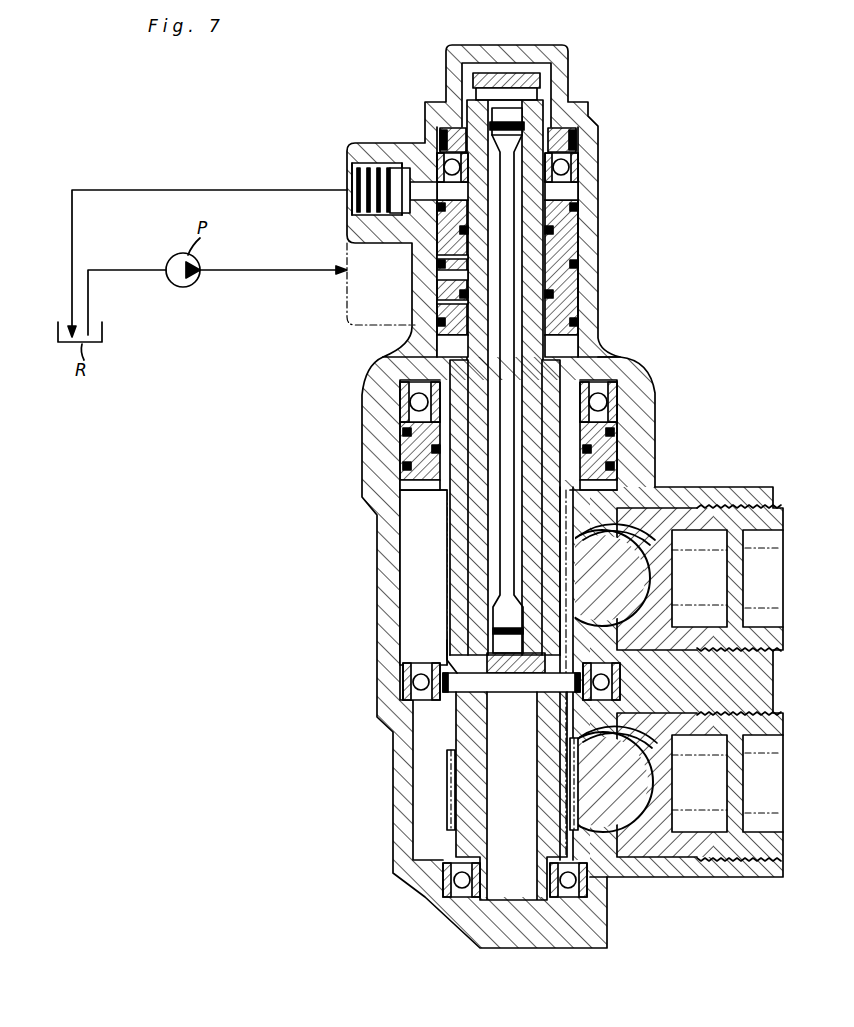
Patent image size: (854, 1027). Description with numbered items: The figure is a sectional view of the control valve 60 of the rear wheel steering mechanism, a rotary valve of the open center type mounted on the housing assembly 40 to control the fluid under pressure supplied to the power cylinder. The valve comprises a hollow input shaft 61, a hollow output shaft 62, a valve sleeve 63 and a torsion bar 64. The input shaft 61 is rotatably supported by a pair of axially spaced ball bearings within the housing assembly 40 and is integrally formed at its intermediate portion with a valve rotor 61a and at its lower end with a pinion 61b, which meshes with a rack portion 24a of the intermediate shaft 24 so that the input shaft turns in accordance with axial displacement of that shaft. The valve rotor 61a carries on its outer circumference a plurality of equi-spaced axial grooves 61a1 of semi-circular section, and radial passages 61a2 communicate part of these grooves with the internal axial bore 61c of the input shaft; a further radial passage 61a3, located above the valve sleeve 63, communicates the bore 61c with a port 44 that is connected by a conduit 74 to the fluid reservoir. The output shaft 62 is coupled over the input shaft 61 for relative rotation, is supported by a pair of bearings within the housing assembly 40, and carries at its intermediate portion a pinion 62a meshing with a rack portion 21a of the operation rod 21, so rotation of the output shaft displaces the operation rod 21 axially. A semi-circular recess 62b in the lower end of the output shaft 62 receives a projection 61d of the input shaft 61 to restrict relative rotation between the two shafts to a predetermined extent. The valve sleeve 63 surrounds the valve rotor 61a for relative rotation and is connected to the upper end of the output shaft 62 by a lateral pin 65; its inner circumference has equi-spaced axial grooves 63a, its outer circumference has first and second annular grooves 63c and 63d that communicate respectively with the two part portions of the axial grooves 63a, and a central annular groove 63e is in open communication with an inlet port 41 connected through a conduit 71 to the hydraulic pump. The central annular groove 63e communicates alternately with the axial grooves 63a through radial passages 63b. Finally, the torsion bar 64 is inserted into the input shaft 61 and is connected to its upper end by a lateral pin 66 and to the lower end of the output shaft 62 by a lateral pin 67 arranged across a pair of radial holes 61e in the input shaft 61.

The control valve 60 is at (655, 158).
The hollow input shaft 61 is at (552, 108).
The valve rotor 61a is at (546, 273).
The axial grooves 61a1 is at (440, 292).
The radial passages 61a2 is at (460, 265).
The radial passage 61a3 is at (440, 191).
The pinion 61b is at (450, 800).
The internal axial bore 61c is at (538, 250).
The projection 61d is at (560, 720).
The radial holes 61e is at (455, 662).
The hollow output shaft 62 is at (622, 360).
The pinion 62a is at (440, 582).
The semi-circular recess 62b is at (553, 742).
The valve sleeve 63 is at (578, 206).
The axial grooves 63a is at (578, 291).
The radial passages 63b is at (437, 276).
The first annular groove 63c is at (578, 228).
The second annular groove 63d is at (578, 320).
The central annular groove 63e is at (572, 268).
The torsion bar 64 is at (503, 532).
The lateral pin 65 is at (437, 352).
The lateral pin 66 is at (474, 88).
The lateral pin 67 is at (460, 692).
The housing assembly 40 is at (656, 426).
The operation rod 21 is at (628, 552).
The rack portion 21a is at (643, 492).
The intermediate shaft 24 is at (627, 818).
The rack portion 24a is at (585, 835).
The inlet port 41 is at (344, 284).
The port 44 is at (349, 178).
The conduit 71 is at (262, 272).
The conduit 74 is at (250, 188).